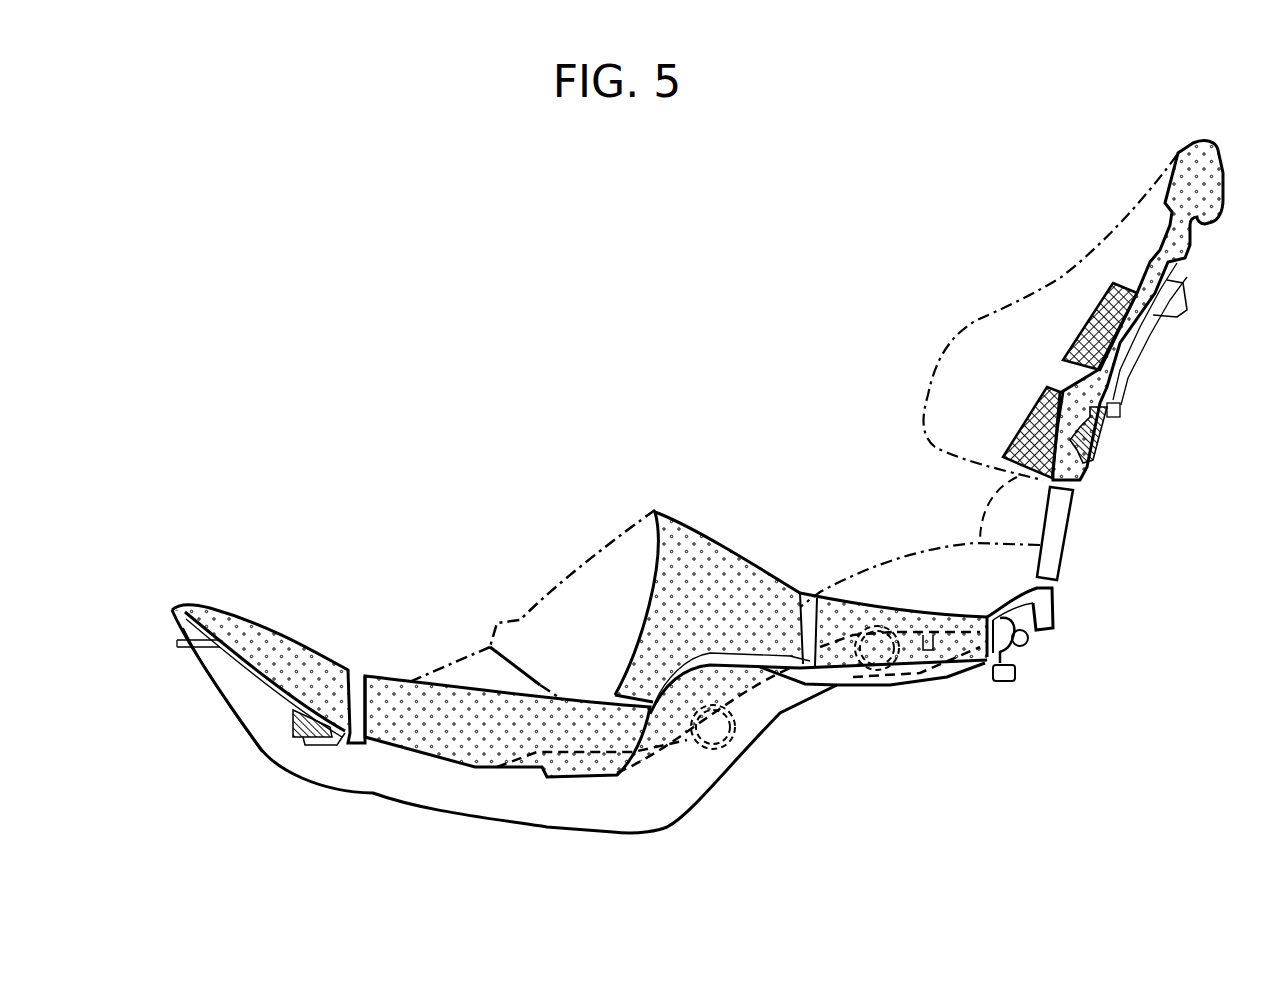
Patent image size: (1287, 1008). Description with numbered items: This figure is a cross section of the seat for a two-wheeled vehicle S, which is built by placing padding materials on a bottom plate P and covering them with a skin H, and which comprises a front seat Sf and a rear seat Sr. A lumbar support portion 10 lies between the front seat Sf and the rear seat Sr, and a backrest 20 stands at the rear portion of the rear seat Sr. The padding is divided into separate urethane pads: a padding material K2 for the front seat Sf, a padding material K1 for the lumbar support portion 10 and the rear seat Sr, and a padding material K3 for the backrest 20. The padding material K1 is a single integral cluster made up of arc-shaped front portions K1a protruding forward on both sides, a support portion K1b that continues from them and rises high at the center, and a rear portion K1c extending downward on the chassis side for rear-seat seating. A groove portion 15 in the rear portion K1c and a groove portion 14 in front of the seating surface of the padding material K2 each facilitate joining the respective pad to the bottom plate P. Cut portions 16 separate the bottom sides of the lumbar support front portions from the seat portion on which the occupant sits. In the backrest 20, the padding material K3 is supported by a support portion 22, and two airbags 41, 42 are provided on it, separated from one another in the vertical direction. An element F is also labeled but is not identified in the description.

The seat for a two-wheeled vehicle S is at (402, 285).
The lumbar support portion 10 is at (530, 557).
The backrest 20 is at (1070, 240).
The support portion 22 is at (1130, 343).
The airbag 41 is at (1033, 435).
The airbag 42 is at (1090, 337).
The padding material for the lumbar support portion and rear seat K1 is at (760, 340).
The front portions K1a is at (592, 552).
The support portion K1b is at (667, 523).
The rear portion K1c is at (847, 613).
The padding material for the front seat K2 is at (427, 737).
The padding material for the backrest K3 is at (1193, 143).
The skin H is at (280, 677).
The bottom plate P is at (935, 793).
The frame F is at (703, 710).
The front seat Sf is at (239, 613).
The rear seat Sr is at (883, 560).
The groove portion 14 is at (358, 685).
The groove portion 15 is at (808, 600).
The cut portions 16 is at (490, 647).